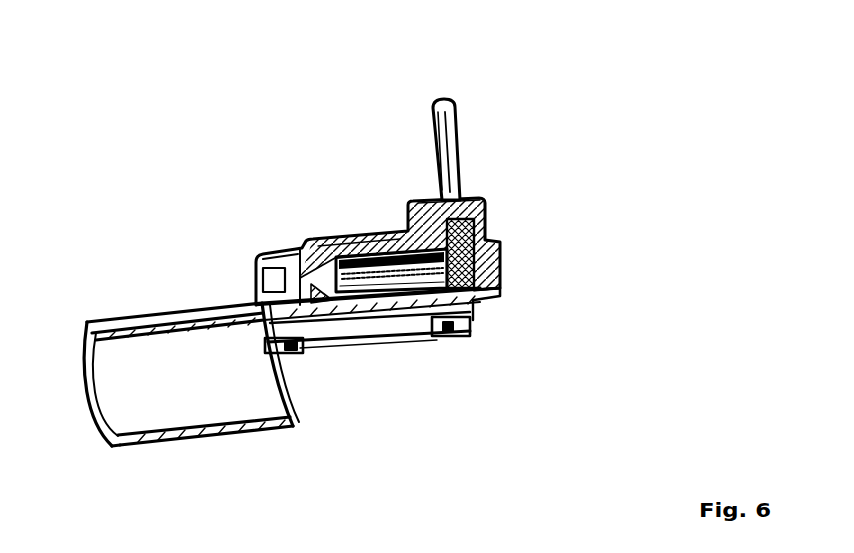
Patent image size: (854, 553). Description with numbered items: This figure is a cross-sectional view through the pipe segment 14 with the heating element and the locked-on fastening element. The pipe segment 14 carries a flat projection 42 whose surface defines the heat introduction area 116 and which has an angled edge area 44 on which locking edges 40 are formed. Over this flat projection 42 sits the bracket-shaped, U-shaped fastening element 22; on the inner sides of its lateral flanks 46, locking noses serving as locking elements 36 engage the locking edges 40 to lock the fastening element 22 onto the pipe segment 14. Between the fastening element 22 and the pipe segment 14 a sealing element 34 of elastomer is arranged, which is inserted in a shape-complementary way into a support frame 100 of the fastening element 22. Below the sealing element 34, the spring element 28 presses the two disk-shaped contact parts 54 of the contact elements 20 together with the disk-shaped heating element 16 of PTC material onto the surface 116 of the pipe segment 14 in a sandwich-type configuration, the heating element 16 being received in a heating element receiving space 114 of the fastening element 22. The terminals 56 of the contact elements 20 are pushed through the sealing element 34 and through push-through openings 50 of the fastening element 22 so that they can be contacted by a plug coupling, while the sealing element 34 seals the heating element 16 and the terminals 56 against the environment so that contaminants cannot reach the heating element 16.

The pipe segment 14 is at (138, 316).
The heating element 16 is at (498, 276).
The contact element 20 is at (460, 105).
The fastening element 22 is at (492, 216).
The spring element 28 is at (322, 250).
The sealing element 34 is at (500, 249).
The locking element 36 is at (300, 352).
The locking edge 40 is at (272, 355).
The flat projection 42 is at (500, 292).
The angled edge area 44 is at (414, 325).
The lateral flank 46 is at (368, 345).
The push-through opening 50 is at (458, 200).
The contact part 54 is at (362, 250).
The terminal 56 is at (434, 118).
The support frame 100 is at (265, 282).
The heating element receiving space 114 is at (396, 244).
The heat introduction area 116 is at (404, 240).